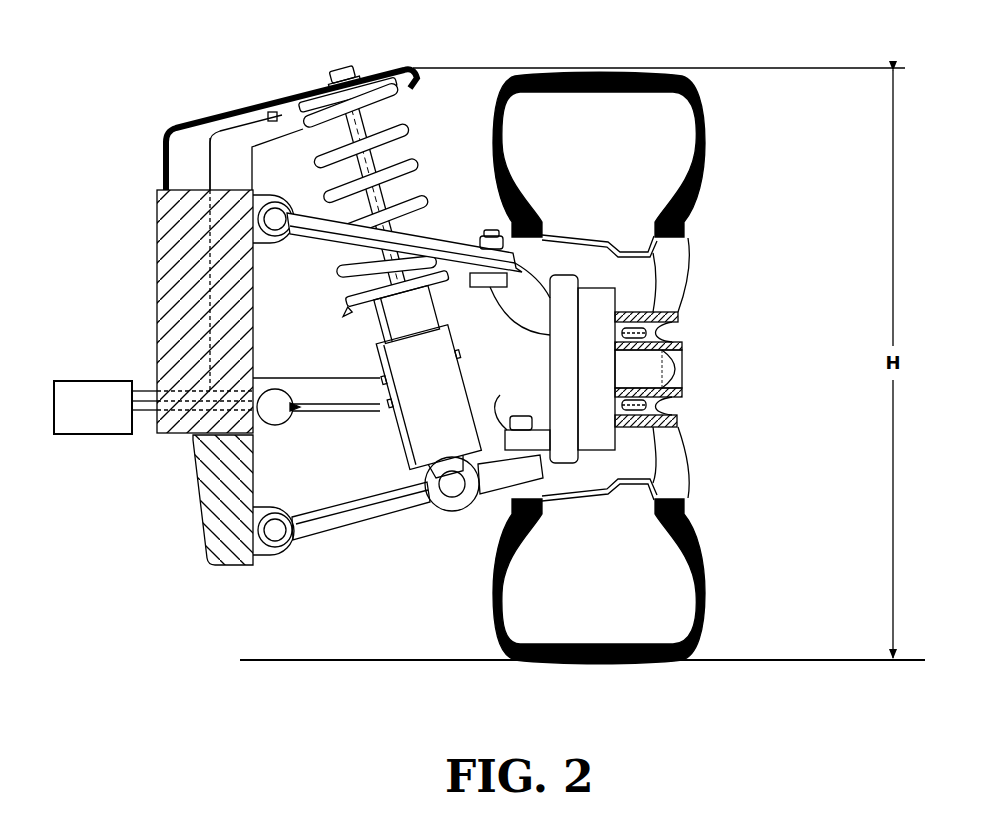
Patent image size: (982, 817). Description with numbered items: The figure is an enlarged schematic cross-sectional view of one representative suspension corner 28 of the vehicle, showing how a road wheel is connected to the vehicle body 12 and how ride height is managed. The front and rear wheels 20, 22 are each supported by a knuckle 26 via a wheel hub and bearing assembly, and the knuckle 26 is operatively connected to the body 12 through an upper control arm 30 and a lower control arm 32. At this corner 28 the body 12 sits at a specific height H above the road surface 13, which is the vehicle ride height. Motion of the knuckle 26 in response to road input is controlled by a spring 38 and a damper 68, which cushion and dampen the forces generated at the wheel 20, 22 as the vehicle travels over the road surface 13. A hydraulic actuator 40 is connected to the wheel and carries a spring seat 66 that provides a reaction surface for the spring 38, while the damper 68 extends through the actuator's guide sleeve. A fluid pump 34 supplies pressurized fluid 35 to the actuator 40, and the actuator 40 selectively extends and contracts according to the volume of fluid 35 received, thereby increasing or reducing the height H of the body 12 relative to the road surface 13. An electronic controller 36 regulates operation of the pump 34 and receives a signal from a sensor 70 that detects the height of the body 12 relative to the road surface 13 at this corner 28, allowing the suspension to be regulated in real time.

The vehicle body 12 is at (339, 70).
The road surface 13 is at (538, 664).
The front wheels 20 is at (700, 560).
The rear wheels 22 is at (599, 571).
The knuckle 26 is at (598, 308).
The suspension corner 28 is at (506, 56).
The upper control arm 30 is at (450, 244).
The lower control arm 32 is at (360, 512).
The fluid pump 34 is at (274, 427).
The pressurized fluid 35 is at (342, 413).
The electronic controller 36 is at (105, 407).
The spring 38 is at (337, 270).
The actuator 40 is at (452, 382).
The spring seat 66 is at (352, 305).
The damper 68 is at (378, 125).
The sensor 70 is at (272, 110).